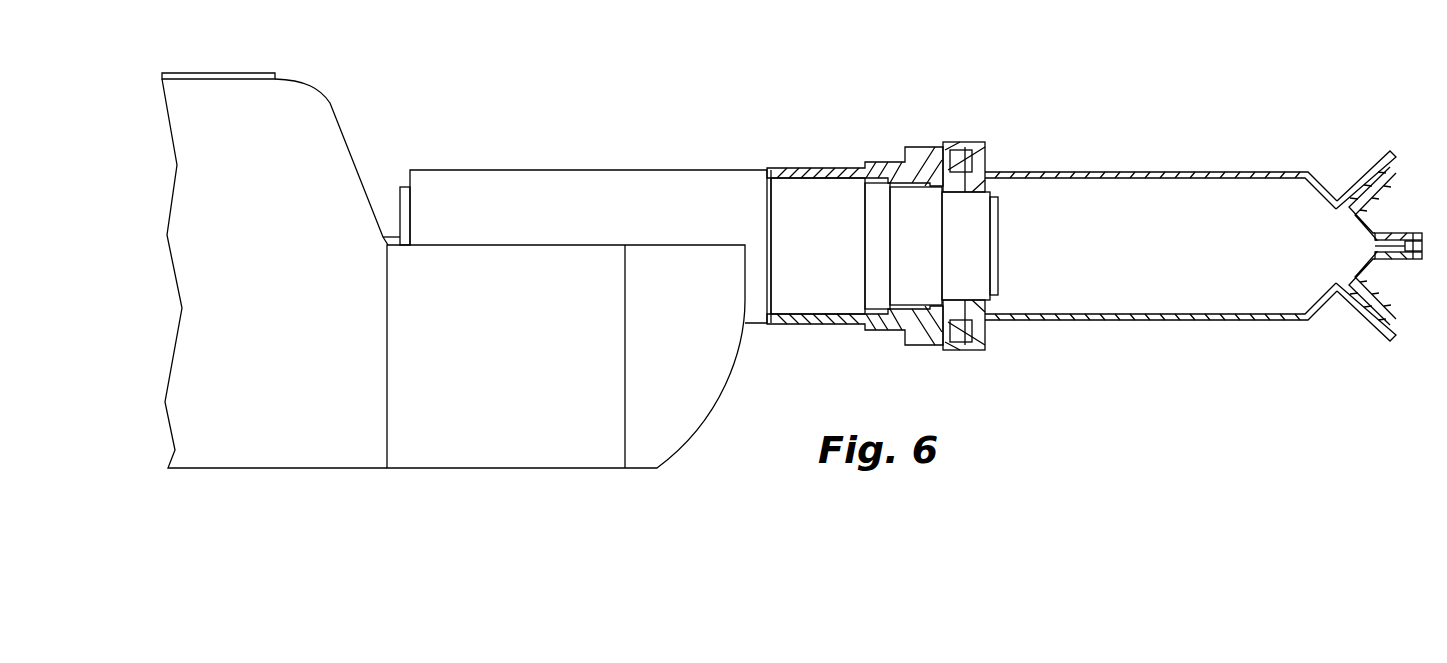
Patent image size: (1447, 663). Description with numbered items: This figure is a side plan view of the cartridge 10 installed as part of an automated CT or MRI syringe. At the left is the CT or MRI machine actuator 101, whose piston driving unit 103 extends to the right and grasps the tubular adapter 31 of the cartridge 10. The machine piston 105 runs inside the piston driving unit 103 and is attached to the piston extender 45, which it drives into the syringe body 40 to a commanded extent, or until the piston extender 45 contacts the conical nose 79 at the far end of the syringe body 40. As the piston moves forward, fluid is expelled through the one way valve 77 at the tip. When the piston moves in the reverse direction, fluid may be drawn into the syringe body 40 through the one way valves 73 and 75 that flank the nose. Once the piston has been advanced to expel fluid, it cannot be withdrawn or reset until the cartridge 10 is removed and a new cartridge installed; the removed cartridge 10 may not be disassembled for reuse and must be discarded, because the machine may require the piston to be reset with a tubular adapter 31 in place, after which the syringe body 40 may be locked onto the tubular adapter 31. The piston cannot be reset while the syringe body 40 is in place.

The cartridge 10 is at (1017, 123).
The tubular adapter 31 is at (855, 165).
The syringe body 40 is at (1128, 172).
The piston extender 45 is at (924, 282).
The one way valve 73 is at (1372, 165).
The one way valve 75 is at (1370, 328).
The one way valve 77 is at (1385, 232).
The conical nose 79 is at (1330, 195).
The CT or MRI machine actuator 101 is at (532, 273).
The piston driving unit 103 is at (705, 178).
The machine piston 105 is at (836, 305).